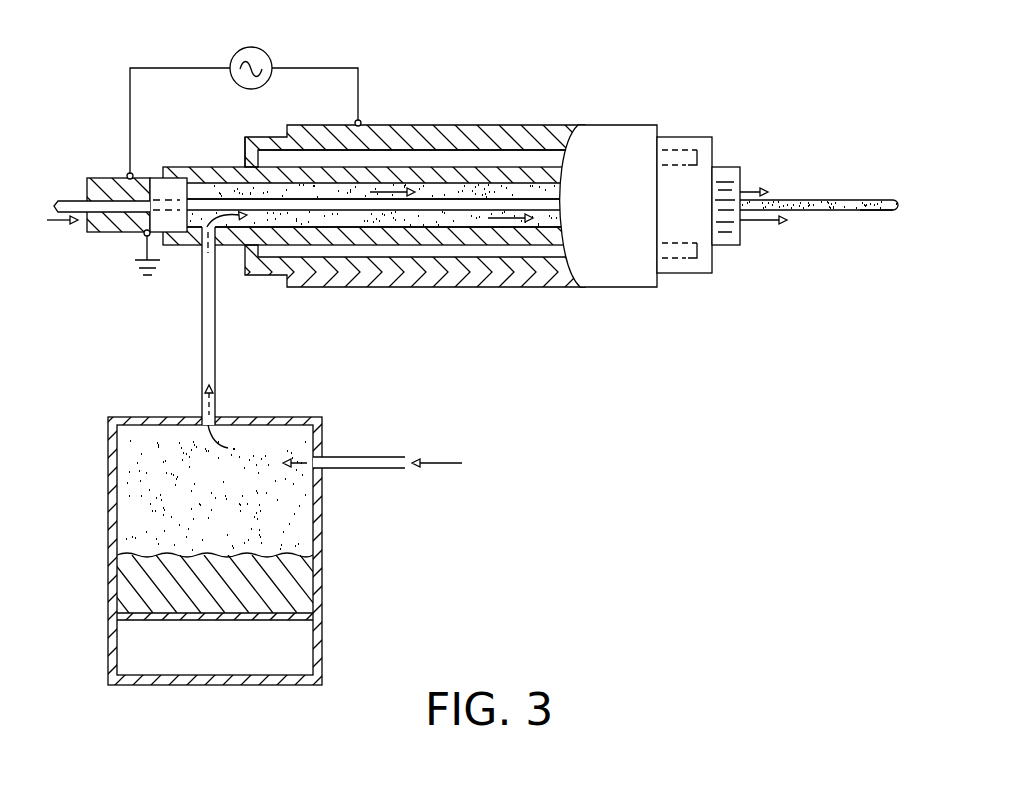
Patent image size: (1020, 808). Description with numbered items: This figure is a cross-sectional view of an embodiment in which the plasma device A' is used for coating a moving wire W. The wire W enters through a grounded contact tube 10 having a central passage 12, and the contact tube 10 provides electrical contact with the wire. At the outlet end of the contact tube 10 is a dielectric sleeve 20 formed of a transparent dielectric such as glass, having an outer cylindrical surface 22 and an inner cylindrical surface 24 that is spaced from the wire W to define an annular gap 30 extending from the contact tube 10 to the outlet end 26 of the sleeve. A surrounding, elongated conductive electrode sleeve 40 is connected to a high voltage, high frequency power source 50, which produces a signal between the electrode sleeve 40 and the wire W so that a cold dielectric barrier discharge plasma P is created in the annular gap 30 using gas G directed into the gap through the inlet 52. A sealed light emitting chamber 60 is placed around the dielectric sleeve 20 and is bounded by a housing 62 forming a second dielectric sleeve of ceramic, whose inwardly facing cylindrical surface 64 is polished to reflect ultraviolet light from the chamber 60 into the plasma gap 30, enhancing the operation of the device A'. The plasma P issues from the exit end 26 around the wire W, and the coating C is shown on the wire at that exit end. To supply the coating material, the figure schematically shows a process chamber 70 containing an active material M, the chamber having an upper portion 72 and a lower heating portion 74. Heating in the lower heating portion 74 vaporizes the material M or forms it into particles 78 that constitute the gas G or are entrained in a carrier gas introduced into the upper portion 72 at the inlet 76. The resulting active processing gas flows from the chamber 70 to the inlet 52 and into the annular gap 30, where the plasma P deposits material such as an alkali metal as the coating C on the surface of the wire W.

The contact tube 10 is at (387, 200).
The central passage 12 is at (118, 207).
The dielectric sleeve 20 is at (460, 163).
The outer cylindrical surface 22 is at (468, 228).
The inner cylindrical surface 24 is at (468, 228).
The outlet end 26 is at (742, 172).
The annular gap 30 is at (377, 218).
The conductive electrode sleeve 40 is at (405, 128).
The power source 50 is at (258, 47).
The inlet 52 is at (203, 318).
The light emitting chamber 60 is at (370, 162).
The housing 62 is at (231, 126).
The inwardly facing cylindrical surface 64 is at (525, 157).
The process chamber 70 is at (308, 521).
The upper portion 72 is at (323, 495).
The lower heating portion 74 is at (323, 643).
The inlet 76 is at (365, 457).
The particles 78 is at (168, 457).
The device A' is at (669, 76).
The wire W is at (825, 198).
The coating C is at (857, 212).
The plasma P is at (753, 220).
The gas G is at (241, 382).
The active material M is at (285, 583).